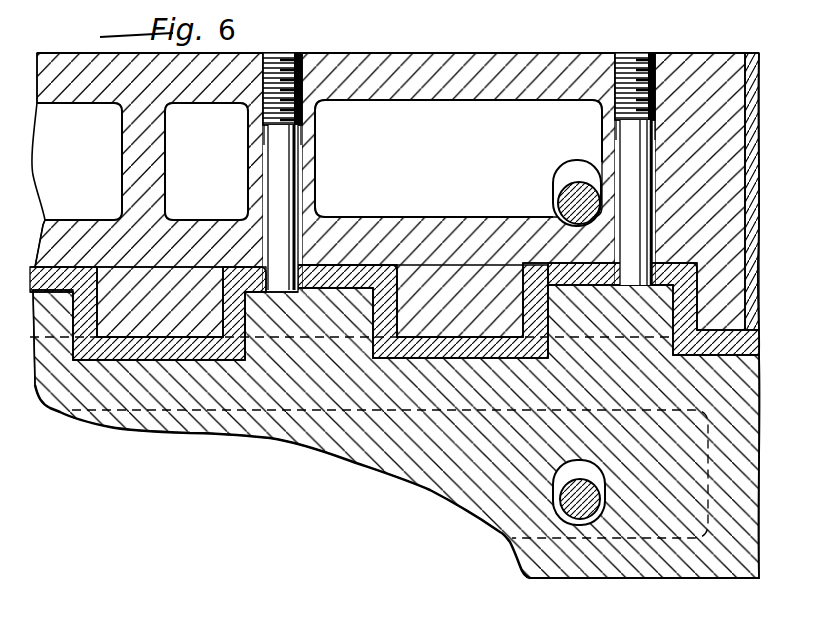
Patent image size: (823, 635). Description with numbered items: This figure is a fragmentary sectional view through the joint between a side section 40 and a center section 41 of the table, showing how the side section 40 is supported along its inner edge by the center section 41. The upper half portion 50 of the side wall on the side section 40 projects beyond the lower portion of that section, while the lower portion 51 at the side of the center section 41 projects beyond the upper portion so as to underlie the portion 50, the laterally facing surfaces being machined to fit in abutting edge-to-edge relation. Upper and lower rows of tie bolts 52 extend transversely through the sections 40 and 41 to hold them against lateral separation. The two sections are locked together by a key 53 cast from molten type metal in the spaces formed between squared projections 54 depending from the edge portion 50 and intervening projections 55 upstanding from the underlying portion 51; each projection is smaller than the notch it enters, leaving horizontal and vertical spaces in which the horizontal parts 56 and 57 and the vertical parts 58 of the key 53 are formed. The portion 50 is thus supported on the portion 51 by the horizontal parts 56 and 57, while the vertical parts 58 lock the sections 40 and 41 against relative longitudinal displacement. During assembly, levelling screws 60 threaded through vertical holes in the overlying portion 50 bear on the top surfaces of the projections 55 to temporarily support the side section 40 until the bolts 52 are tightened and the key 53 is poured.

The side section 40 is at (522, 53).
The center section 41 is at (410, 455).
The upper half portion of the side wall 50 is at (449, 57).
The lower portion 51 is at (338, 437).
The tie bolts 52 is at (563, 199).
The key 53 is at (349, 285).
The squared projections 54 is at (163, 332).
The intervening projections 55 is at (363, 300).
The horizontal part of the key 56 is at (322, 270).
The horizontal part of the key 57 is at (105, 358).
The vertical parts of the key 58 is at (93, 317).
The screws 60 is at (628, 157).